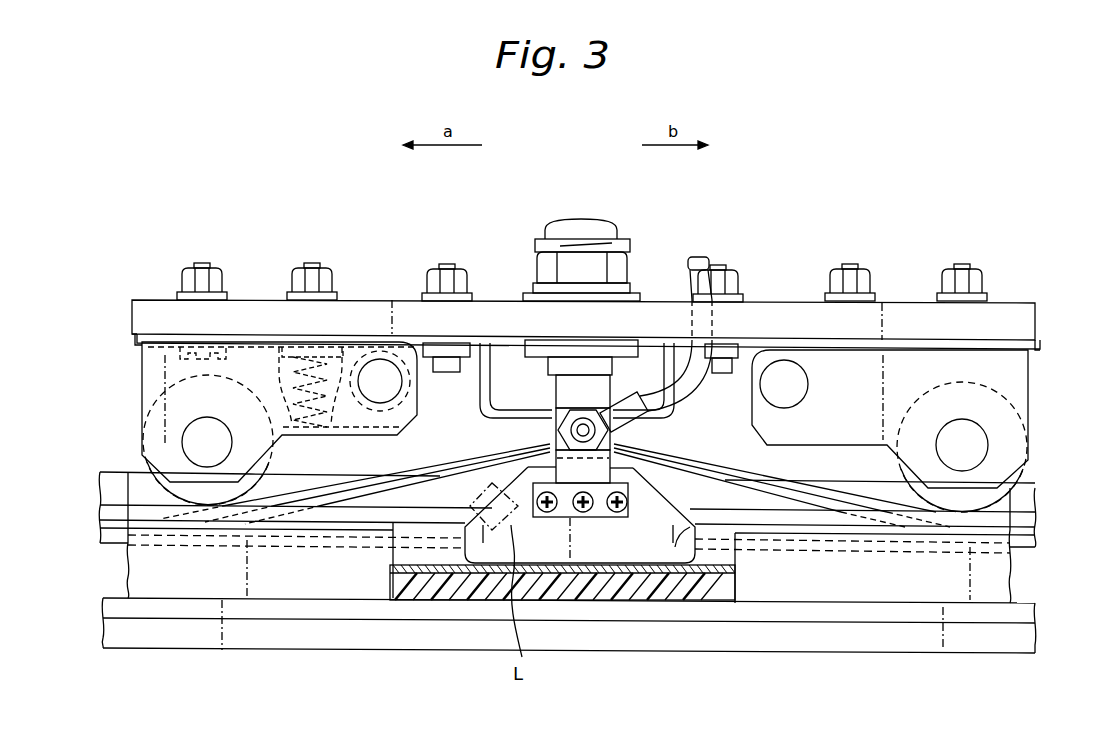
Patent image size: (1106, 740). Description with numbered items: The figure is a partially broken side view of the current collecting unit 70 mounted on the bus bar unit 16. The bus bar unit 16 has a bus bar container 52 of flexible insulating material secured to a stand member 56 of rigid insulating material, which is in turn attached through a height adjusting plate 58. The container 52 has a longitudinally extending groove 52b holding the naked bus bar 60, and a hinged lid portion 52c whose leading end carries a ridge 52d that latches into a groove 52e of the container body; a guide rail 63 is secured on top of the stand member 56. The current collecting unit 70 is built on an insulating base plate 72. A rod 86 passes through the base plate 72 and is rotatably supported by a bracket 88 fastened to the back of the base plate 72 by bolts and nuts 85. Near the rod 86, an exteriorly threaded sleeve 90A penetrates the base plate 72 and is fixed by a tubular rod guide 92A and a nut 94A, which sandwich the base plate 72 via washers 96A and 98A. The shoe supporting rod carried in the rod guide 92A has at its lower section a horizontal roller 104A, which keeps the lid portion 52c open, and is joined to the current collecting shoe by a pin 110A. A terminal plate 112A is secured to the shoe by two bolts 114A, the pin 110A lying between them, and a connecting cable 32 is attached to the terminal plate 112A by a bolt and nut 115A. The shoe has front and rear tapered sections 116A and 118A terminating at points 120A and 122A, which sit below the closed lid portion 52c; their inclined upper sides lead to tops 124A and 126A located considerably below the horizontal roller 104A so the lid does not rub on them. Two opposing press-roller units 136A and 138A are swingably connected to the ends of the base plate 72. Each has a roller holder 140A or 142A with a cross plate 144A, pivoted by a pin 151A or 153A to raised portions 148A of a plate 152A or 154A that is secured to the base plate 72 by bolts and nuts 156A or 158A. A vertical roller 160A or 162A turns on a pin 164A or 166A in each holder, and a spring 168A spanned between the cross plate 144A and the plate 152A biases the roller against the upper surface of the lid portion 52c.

The bus bar unit 16 is at (1046, 620).
The connecting cable 32 is at (710, 260).
The bus bar container 52 is at (128, 570).
The longitudinally extending groove 52b is at (731, 540).
The lid portion 52c is at (127, 473).
The ridge 52d is at (100, 537).
The groove 52e is at (315, 542).
The stand member 56 is at (370, 608).
The height adjusting plate 58 is at (590, 637).
The naked bus bar 60 is at (392, 566).
The guide rail 63 is at (292, 472).
The current collecting unit 70 is at (794, 219).
The base plate 72 is at (1020, 318).
The bolts and nuts 85 is at (444, 270).
The rod 86 is at (553, 226).
The bracket 88 is at (481, 352).
The exteriorly threaded sleeve 90A is at (596, 252).
The tubular rod guide 92A is at (545, 366).
The nut 94A is at (628, 265).
The washer 96A is at (628, 291).
The washer 98A is at (528, 293).
The horizontal roller 104A is at (546, 466).
The pin 110A is at (583, 516).
The terminal plate 112A is at (604, 471).
The bolts 114A is at (550, 518).
The bolt and nut 115A is at (583, 418).
The front tapered section 116A is at (497, 511).
The rear tapered section 118A is at (672, 540).
The terminating point 120A is at (482, 528).
The terminating point 122A is at (697, 527).
The top 124A is at (460, 460).
The top 126A is at (757, 466).
The press-roller unit 136A is at (247, 356).
The press-roller unit 138A is at (842, 370).
The roller holder 140A is at (142, 360).
The roller holder 142A is at (1029, 375).
The cross plate 144A is at (360, 427).
The raised portions 148A is at (358, 345).
The pin 151A is at (380, 378).
The plate 152A is at (132, 338).
The pin 153A is at (783, 372).
The plate 154A is at (1040, 349).
The bolts and nuts 156A is at (203, 263).
The bolts and nuts 158A is at (850, 264).
The vertical roller 160A is at (155, 476).
The vertical roller 162A is at (1013, 478).
The pin 164A is at (206, 420).
The pin 166A is at (968, 440).
The spring 168A is at (290, 378).